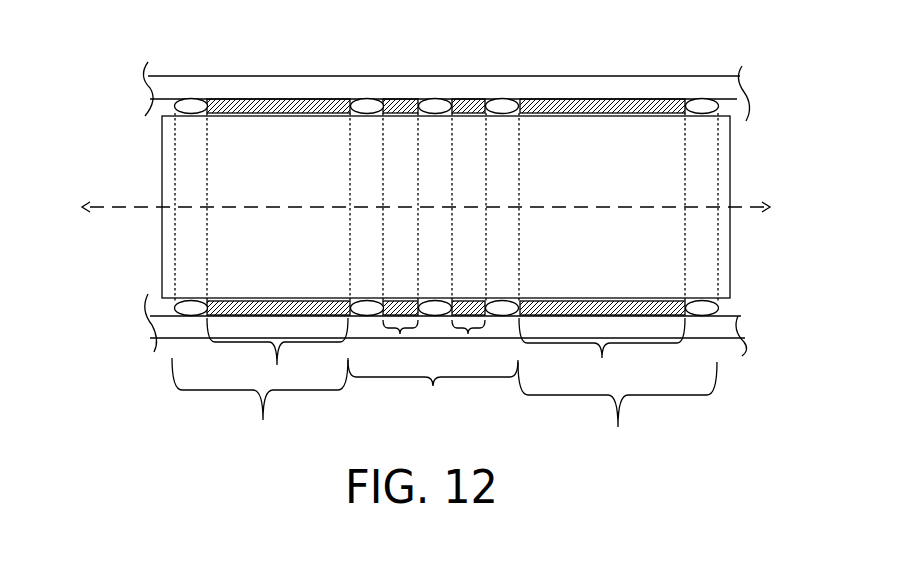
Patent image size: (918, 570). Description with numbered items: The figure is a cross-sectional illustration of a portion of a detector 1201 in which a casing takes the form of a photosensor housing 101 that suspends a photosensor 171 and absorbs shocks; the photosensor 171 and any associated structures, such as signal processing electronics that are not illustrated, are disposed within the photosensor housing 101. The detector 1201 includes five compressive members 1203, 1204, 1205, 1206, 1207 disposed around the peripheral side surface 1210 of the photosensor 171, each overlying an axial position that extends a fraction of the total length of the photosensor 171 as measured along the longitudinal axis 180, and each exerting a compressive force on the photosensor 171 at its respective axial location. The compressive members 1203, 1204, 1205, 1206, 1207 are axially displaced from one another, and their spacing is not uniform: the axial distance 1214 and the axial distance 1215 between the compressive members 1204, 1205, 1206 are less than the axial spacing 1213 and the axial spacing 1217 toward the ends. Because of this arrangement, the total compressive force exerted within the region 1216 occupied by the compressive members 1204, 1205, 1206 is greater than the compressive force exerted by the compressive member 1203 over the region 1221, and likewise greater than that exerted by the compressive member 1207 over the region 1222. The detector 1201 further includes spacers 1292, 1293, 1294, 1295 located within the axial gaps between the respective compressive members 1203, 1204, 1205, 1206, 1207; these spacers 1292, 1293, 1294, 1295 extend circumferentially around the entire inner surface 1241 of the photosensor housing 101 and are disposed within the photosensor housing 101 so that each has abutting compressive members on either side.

The photosensor housing 101 is at (718, 92).
The photosensor 171 is at (676, 191).
The longitudinal axis 180 is at (753, 207).
The detector 1201 is at (40, 52).
The compressive member 1203 is at (186, 107).
The compressive member 1204 is at (375, 102).
The compressive member 1205 is at (432, 108).
The compressive member 1206 is at (497, 108).
The compressive member 1207 is at (708, 107).
The peripheral side surface 1210 is at (253, 114).
The axial spacing 1213 is at (277, 352).
The axial distance 1214 is at (398, 339).
The axial distance 1215 is at (472, 339).
The region 1216 is at (433, 386).
The axial spacing 1217 is at (602, 351).
The region 1221 is at (260, 401).
The region 1222 is at (617, 407).
The inner surface 1241 is at (735, 308).
The spacer 1292 is at (220, 310).
The spacer 1293 is at (385, 308).
The spacer 1294 is at (485, 303).
The spacer 1295 is at (568, 310).